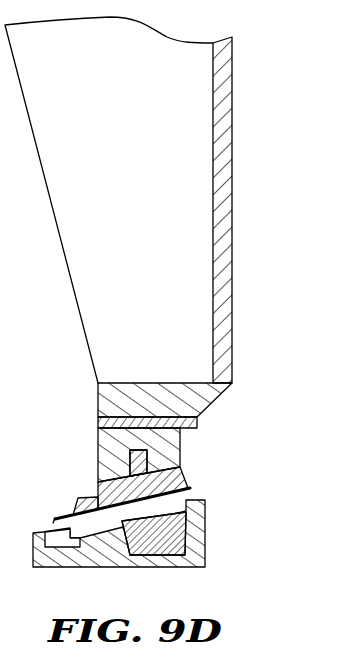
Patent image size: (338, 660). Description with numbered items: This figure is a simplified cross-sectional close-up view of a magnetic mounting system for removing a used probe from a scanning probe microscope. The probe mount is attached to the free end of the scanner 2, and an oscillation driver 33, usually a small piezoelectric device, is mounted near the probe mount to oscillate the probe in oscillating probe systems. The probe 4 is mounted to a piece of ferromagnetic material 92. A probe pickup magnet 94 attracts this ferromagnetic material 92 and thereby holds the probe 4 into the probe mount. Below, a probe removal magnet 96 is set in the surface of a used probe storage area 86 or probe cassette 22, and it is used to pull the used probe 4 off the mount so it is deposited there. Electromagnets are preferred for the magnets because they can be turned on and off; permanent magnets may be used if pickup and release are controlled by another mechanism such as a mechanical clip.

The scanner 2 is at (227, 225).
The oscillation driver 33 is at (97, 417).
The probe pickup magnet 94 is at (130, 452).
The ferromagnetic material 92 is at (181, 468).
The probe 4 is at (77, 502).
The probe removal magnet 96 is at (183, 533).
The used probe storage area 86 is at (169, 549).
The probe cassette 22 is at (169, 549).